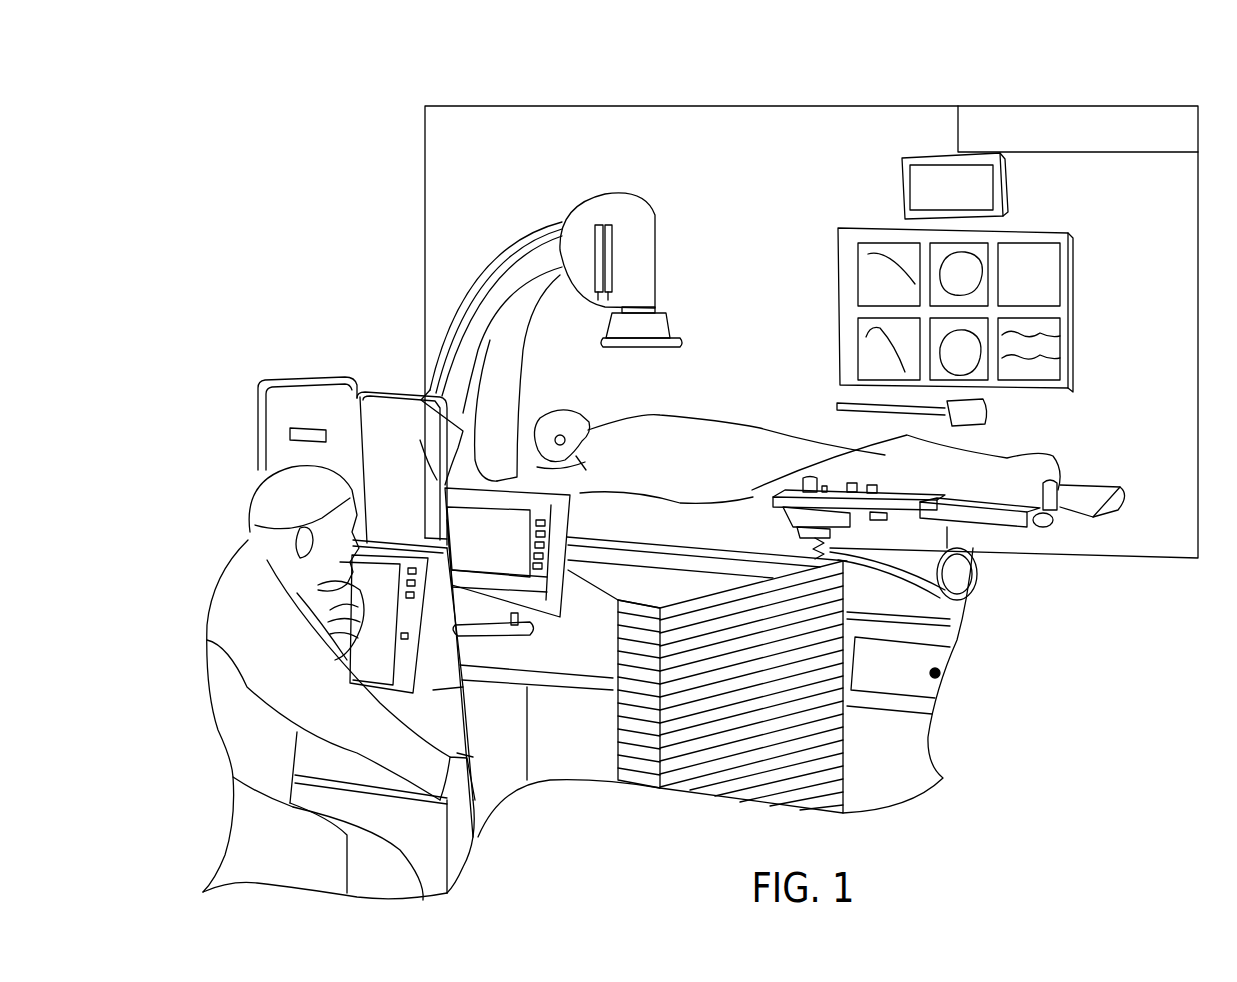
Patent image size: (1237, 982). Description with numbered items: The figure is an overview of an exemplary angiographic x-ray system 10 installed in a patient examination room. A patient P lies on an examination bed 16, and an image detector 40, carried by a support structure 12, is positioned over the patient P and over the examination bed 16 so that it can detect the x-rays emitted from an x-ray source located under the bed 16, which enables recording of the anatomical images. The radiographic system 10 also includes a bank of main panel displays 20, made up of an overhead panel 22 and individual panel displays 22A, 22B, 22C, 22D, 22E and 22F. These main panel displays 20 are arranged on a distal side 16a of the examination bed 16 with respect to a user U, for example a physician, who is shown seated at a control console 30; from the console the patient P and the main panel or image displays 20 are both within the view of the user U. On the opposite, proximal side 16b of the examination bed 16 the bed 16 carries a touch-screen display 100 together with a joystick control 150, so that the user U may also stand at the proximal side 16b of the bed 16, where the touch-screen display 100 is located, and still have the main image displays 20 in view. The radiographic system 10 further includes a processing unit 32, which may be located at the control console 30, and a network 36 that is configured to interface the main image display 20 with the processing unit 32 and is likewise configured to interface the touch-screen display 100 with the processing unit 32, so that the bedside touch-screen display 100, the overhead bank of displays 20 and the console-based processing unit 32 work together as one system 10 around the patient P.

The angiographic x-ray system 10 is at (398, 276).
The support structure 12 is at (650, 270).
The examination bed 16 is at (977, 562).
The distal side 16a is at (1105, 485).
The proximal side 16b is at (990, 500).
The main panel displays 20 is at (969, 302).
The overhead panel 22 is at (900, 181).
The panel display 22A is at (841, 262).
The panel display 22B is at (980, 253).
The panel display 22C is at (1030, 268).
The panel display 22D is at (848, 346).
The panel display 22E is at (983, 373).
The panel display 22F is at (1048, 348).
The control console 30 is at (373, 566).
The processing unit 32 is at (407, 400).
The network 36 is at (818, 106).
The image detector 40 is at (654, 326).
The touch-screen display 100 is at (1005, 522).
The joystick control 150 is at (1060, 497).
The patient P is at (650, 410).
The user U is at (246, 520).